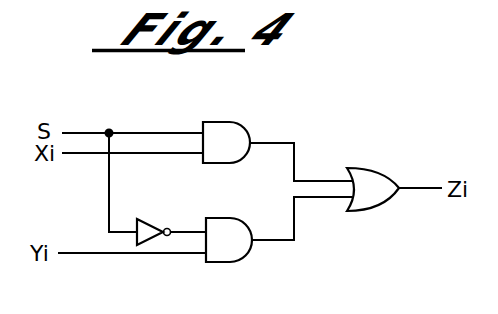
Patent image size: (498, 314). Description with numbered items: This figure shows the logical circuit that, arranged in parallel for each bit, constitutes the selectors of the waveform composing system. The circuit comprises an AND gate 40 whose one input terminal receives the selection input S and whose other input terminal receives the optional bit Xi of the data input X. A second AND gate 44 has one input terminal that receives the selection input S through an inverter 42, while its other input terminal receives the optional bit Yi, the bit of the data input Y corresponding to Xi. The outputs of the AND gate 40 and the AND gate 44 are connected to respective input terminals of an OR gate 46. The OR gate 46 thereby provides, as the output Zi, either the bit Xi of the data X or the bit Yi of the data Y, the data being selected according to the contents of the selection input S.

The AND gate 40 is at (226, 121).
The inverter 42 is at (148, 219).
The AND gate 44 is at (223, 218).
The OR gate 46 is at (370, 165).